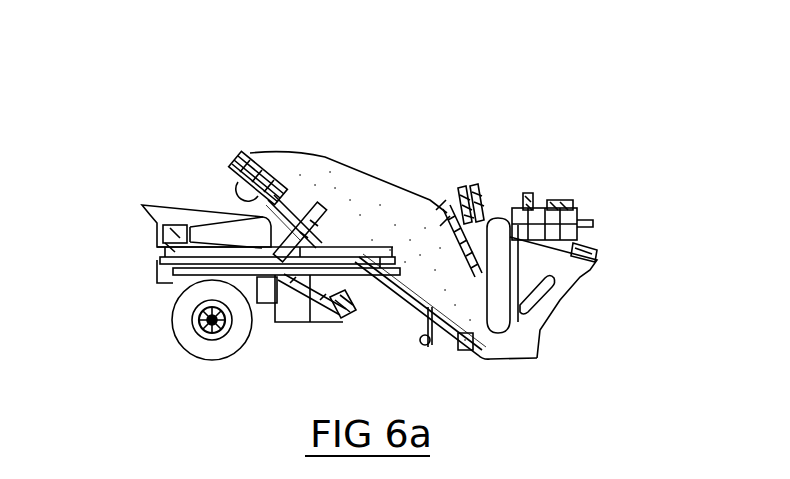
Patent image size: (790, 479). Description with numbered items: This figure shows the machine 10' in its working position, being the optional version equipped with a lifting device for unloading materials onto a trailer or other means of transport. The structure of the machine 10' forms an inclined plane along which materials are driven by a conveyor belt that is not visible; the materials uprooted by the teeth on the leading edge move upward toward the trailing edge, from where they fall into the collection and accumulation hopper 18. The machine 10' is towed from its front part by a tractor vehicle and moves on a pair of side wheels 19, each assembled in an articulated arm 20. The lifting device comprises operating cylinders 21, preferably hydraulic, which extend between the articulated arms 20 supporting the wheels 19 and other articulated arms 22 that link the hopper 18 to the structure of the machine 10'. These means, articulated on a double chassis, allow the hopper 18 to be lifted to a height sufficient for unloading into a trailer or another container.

The machine 10' is at (516, 240).
The hopper 18 is at (157, 220).
The side wheels 19 is at (190, 343).
The articulated arms 20 is at (353, 297).
The operating cylinders 21 is at (303, 290).
The articulated arms 22 is at (290, 262).